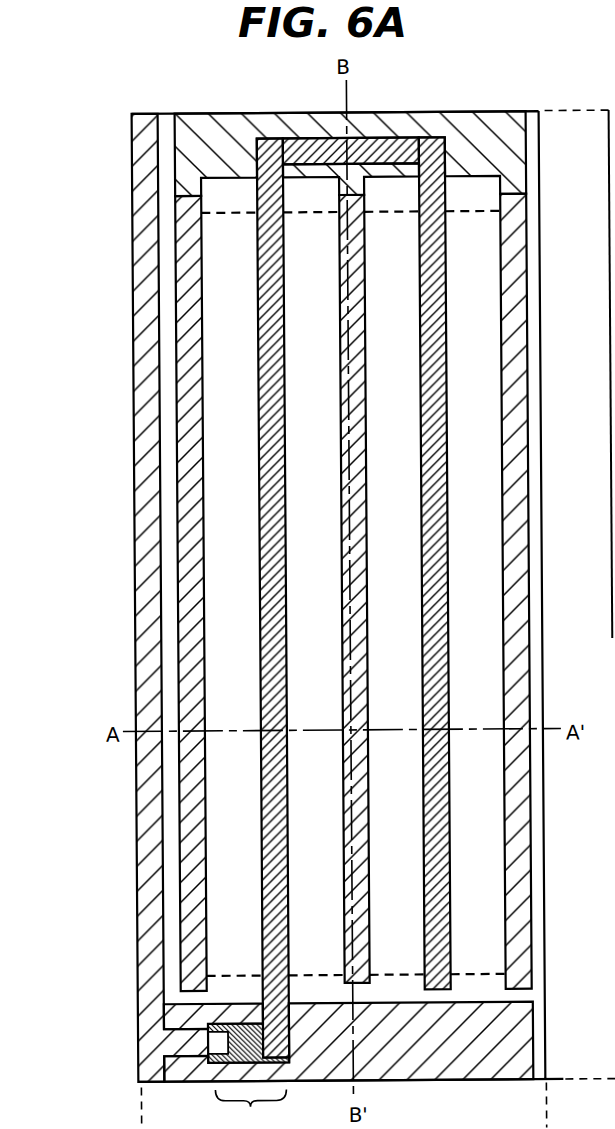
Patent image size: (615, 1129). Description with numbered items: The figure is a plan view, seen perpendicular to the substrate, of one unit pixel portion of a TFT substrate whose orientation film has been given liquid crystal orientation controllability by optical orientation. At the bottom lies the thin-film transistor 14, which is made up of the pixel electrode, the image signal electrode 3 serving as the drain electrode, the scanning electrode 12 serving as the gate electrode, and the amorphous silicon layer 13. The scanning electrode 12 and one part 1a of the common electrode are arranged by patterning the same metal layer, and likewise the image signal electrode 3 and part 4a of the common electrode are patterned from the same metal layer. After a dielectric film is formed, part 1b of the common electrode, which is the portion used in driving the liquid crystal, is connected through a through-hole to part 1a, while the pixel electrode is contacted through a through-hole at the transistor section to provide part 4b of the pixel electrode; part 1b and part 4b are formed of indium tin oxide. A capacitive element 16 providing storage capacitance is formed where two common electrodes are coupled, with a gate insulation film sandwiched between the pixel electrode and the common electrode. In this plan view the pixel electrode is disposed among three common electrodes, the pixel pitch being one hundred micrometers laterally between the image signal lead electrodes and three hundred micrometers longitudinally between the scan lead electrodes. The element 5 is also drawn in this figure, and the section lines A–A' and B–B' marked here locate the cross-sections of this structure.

The part of the common electrode 1a is at (200, 156).
The part of the common electrode 1b is at (448, 273).
The image signal electrode 3 is at (140, 277).
The part of the common electrode 4a is at (310, 1027).
The part of the pixel electrode 4b is at (265, 487).
The side wall portion 5 is at (526, 447).
The scanning electrode 12 is at (521, 1047).
The amorphous silicon layer 13 is at (236, 1026).
The thin-film transistor 14 is at (250, 1107).
The capacitive element 16 is at (447, 164).